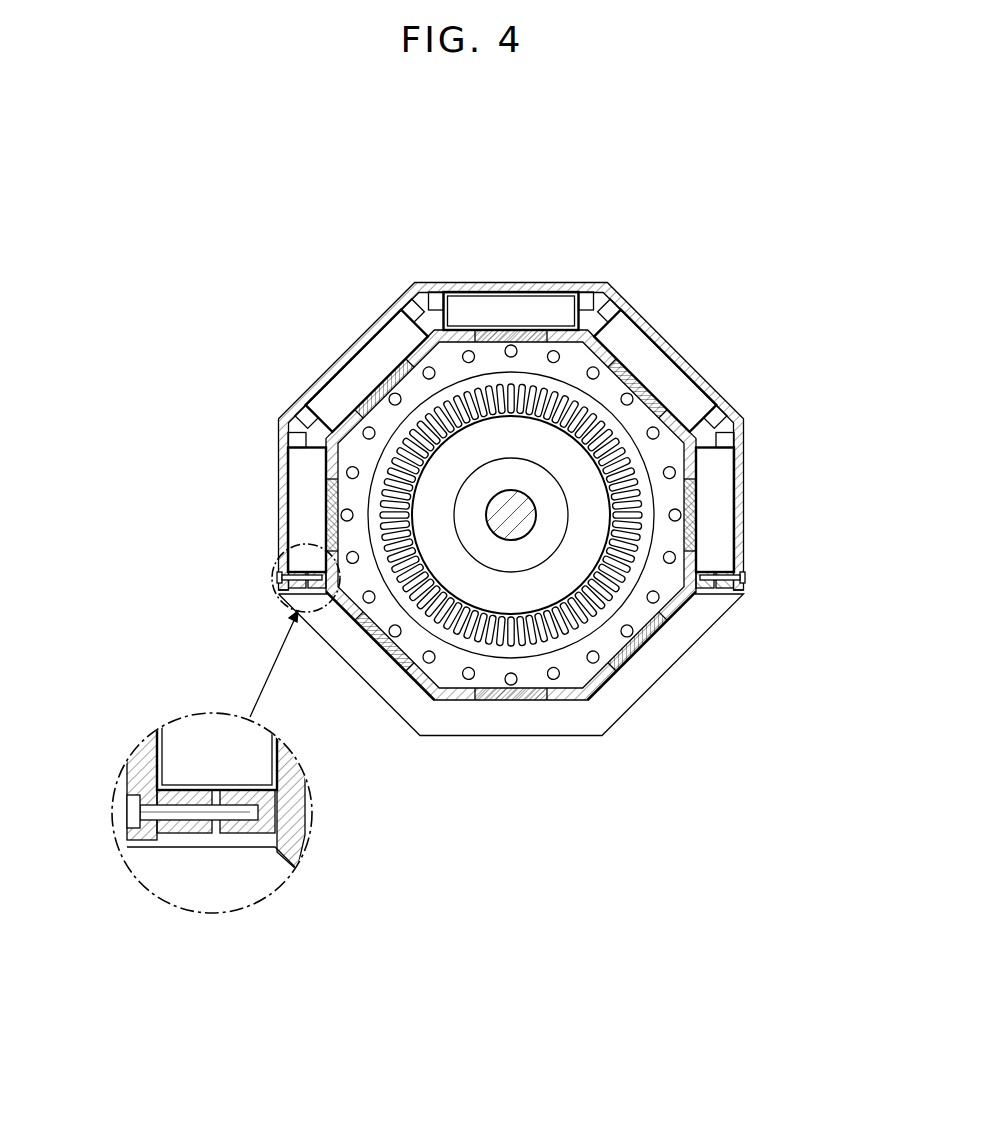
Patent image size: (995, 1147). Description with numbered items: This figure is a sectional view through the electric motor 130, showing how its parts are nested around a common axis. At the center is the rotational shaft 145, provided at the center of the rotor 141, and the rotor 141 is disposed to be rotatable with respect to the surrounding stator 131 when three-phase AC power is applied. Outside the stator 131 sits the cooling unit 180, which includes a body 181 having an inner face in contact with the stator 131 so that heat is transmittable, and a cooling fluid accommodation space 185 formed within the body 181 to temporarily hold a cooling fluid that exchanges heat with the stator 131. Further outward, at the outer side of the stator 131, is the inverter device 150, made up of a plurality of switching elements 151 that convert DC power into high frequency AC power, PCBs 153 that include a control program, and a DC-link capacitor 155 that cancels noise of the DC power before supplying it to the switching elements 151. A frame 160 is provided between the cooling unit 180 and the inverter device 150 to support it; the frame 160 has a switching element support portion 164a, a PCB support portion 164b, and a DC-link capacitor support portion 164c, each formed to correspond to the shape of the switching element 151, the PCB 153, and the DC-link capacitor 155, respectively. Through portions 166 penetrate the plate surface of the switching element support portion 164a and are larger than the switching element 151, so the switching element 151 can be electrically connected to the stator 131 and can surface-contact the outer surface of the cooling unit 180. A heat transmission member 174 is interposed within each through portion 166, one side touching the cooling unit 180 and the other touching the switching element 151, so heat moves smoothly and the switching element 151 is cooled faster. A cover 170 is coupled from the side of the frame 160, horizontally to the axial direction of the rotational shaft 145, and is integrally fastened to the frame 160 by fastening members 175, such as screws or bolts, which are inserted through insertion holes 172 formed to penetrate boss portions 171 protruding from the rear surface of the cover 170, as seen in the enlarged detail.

The electric motor 130 is at (350, 254).
The stator 131 is at (571, 643).
The rotor 141 is at (519, 593).
The rotational shaft 145 is at (512, 517).
The inverter device 150 is at (828, 270).
The switching element 151 is at (535, 310).
The PCB 153 is at (368, 361).
The DC-link capacitor 155 is at (704, 625).
The frame 160 is at (715, 181).
The switching element support portion 164a is at (583, 318).
The PCB support portion 164b is at (603, 338).
The DC-link capacitor support portion 164c is at (653, 645).
The through portion 166 is at (487, 330).
The cover 170 is at (576, 283).
The boss portion 171 is at (197, 828).
The insertion hole 172 is at (168, 820).
The heat transmission member 174 is at (505, 337).
The fastening member 175 is at (128, 813).
The cooling unit 180 is at (432, 790).
The body 181 is at (409, 650).
The cooling fluid accommodation space 185 is at (381, 642).